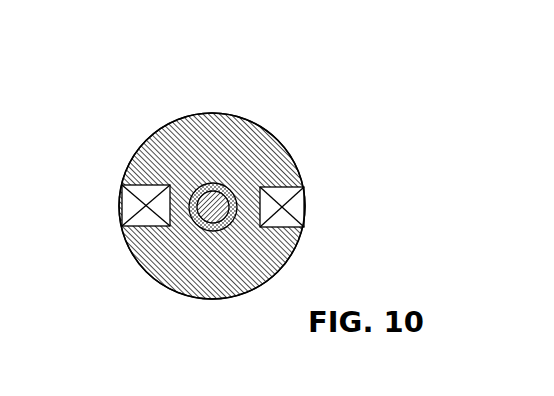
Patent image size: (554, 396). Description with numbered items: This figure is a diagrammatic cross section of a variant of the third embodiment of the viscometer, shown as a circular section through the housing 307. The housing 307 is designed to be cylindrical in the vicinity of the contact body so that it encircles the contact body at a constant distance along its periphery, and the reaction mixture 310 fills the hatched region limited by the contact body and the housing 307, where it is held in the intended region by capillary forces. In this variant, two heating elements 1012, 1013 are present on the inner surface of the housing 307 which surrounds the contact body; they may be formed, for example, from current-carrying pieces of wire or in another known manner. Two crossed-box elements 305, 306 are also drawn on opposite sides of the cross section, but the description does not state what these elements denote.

The first coil 305 is at (128, 203).
The second coil 306 is at (293, 208).
The housing 307 is at (197, 112).
The reaction mixture 310 is at (158, 278).
The heating element 1012 is at (212, 231).
The heating element 1013 is at (212, 183).